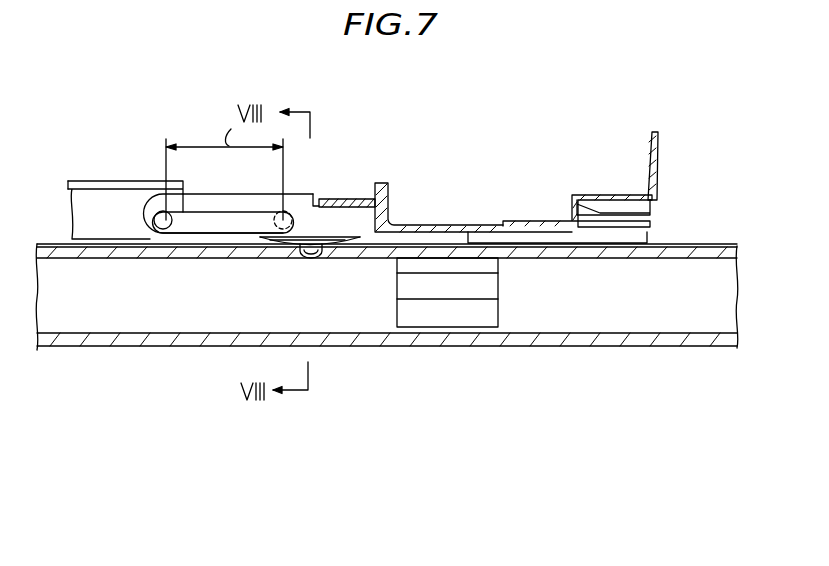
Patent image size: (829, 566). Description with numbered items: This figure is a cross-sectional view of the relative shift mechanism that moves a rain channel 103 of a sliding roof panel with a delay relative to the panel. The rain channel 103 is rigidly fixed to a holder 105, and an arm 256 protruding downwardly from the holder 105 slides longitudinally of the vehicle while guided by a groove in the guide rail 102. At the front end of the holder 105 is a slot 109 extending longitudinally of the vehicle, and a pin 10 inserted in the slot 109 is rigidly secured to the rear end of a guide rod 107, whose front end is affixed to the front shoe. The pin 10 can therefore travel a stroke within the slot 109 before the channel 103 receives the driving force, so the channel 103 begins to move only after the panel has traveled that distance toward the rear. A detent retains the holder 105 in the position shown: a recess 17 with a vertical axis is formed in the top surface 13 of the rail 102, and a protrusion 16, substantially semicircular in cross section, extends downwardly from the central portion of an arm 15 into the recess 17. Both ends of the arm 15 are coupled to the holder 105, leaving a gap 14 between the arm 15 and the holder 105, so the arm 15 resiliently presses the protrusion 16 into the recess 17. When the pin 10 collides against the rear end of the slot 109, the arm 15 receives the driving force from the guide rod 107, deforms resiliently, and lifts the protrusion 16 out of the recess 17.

The pin 10 is at (165, 230).
The top surface 13 is at (468, 243).
The gap 14 is at (337, 247).
The arm 15 is at (284, 244).
The protrusion 16 is at (308, 258).
The recess 17 is at (317, 258).
The guide rail 102 is at (83, 256).
The rain channel 103 is at (450, 230).
The holder 105 is at (309, 190).
The guide rod 107 is at (100, 198).
The slot 109 is at (207, 228).
The arm 256 is at (492, 288).